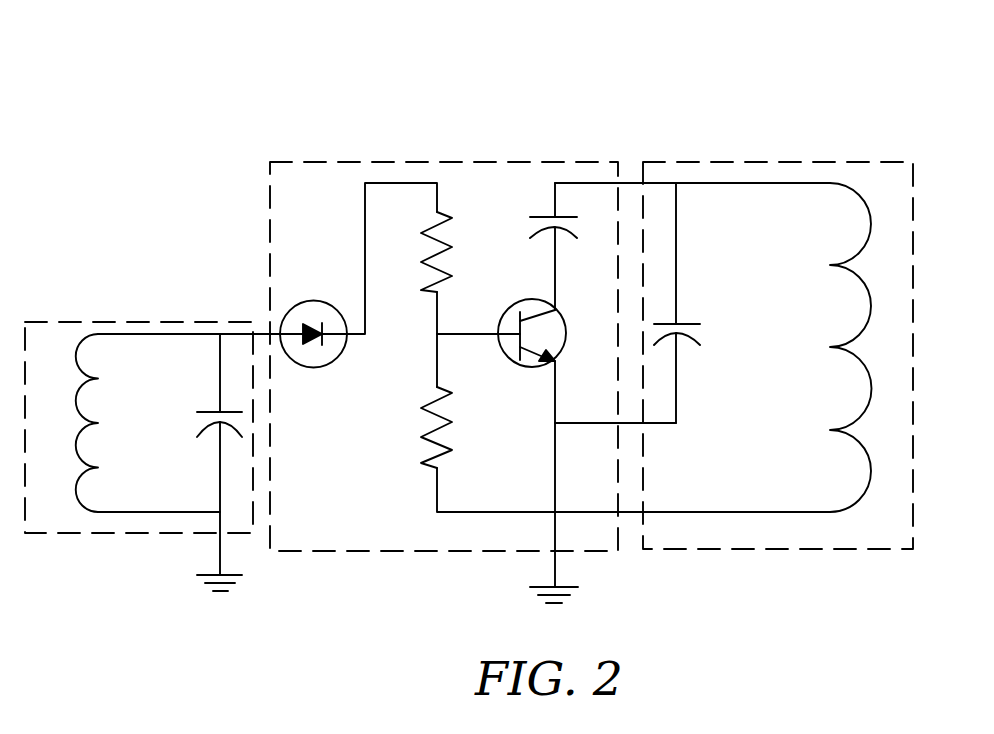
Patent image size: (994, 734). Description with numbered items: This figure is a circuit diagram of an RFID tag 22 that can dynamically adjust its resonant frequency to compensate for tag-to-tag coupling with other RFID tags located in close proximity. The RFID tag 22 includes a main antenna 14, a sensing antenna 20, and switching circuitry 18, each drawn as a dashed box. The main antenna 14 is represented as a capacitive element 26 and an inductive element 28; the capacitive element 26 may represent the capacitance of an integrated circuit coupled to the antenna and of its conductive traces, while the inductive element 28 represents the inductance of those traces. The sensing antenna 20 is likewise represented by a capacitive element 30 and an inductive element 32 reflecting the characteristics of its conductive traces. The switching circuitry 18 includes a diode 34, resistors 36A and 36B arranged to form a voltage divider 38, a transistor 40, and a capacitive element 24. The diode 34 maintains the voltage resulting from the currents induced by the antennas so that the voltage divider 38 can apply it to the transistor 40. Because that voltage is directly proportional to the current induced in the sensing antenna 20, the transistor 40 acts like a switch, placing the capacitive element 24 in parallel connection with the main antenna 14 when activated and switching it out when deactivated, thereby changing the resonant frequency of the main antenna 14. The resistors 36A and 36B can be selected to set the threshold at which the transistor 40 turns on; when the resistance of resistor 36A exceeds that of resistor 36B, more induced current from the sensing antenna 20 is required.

The main antenna 14 is at (830, 162).
The switching circuitry 18 is at (527, 162).
The sensing antenna 20 is at (103, 322).
The RFID tag 22 is at (465, 78).
The capacitive element 24 is at (545, 217).
The capacitive element 26 is at (690, 323).
The inductive element 28 is at (866, 305).
The capacitive element 30 is at (203, 412).
The inductive element 32 is at (75, 402).
The diode 34 is at (321, 301).
The resistor 36A is at (452, 252).
The resistor 36B is at (452, 428).
The voltage divider 38 is at (411, 309).
The transistor 40 is at (561, 319).